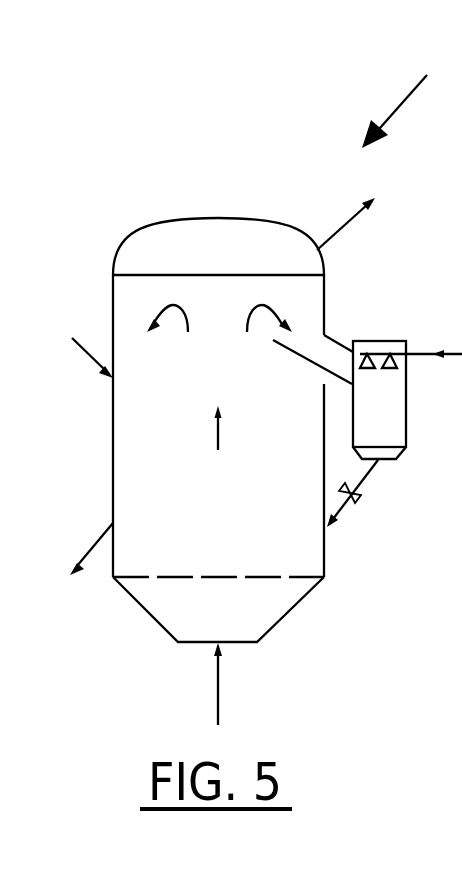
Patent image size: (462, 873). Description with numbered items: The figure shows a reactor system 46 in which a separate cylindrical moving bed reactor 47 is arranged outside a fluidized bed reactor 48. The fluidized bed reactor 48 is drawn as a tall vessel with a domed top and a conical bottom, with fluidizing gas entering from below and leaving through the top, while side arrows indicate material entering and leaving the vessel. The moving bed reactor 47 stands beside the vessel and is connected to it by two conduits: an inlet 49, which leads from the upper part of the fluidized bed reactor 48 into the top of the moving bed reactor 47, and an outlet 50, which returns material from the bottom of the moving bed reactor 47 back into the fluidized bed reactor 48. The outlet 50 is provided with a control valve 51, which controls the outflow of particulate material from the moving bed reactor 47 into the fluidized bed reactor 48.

The reactor system 46 is at (410, 95).
The cylindrical moving bed reactor 47 is at (406, 403).
The fluidized bed reactor 48 is at (113, 453).
The inlet 49 is at (333, 342).
The outlet 50 is at (362, 480).
The control valve 51 is at (358, 502).